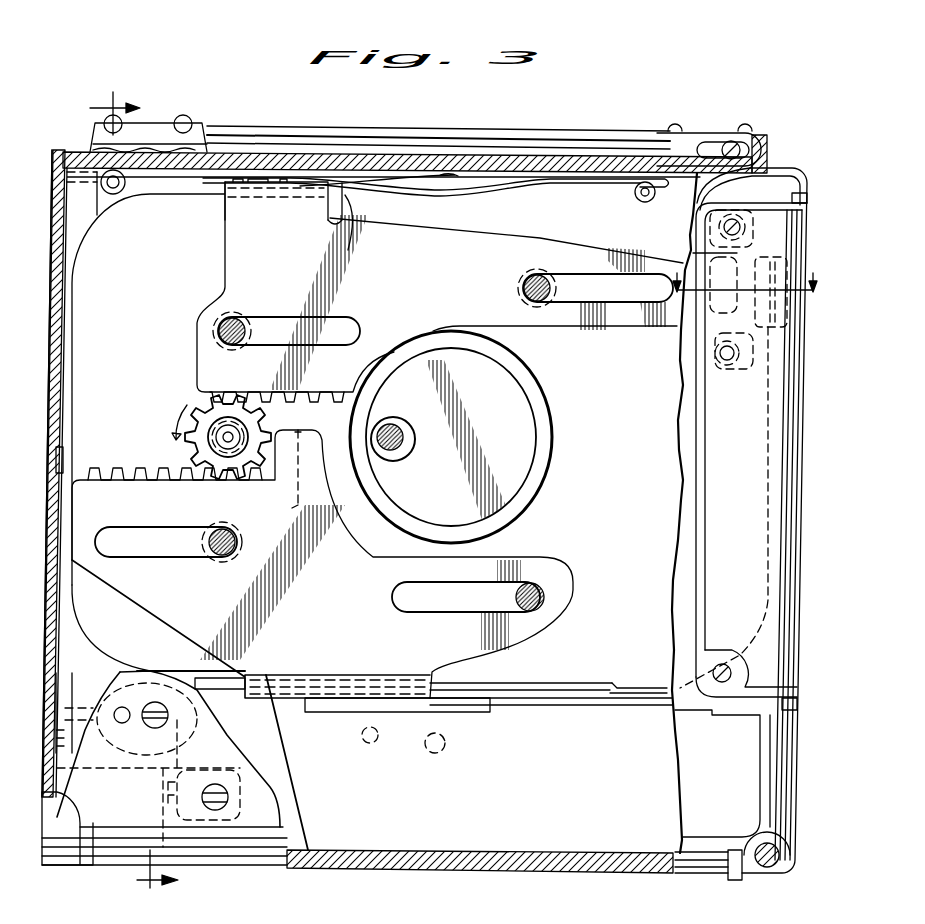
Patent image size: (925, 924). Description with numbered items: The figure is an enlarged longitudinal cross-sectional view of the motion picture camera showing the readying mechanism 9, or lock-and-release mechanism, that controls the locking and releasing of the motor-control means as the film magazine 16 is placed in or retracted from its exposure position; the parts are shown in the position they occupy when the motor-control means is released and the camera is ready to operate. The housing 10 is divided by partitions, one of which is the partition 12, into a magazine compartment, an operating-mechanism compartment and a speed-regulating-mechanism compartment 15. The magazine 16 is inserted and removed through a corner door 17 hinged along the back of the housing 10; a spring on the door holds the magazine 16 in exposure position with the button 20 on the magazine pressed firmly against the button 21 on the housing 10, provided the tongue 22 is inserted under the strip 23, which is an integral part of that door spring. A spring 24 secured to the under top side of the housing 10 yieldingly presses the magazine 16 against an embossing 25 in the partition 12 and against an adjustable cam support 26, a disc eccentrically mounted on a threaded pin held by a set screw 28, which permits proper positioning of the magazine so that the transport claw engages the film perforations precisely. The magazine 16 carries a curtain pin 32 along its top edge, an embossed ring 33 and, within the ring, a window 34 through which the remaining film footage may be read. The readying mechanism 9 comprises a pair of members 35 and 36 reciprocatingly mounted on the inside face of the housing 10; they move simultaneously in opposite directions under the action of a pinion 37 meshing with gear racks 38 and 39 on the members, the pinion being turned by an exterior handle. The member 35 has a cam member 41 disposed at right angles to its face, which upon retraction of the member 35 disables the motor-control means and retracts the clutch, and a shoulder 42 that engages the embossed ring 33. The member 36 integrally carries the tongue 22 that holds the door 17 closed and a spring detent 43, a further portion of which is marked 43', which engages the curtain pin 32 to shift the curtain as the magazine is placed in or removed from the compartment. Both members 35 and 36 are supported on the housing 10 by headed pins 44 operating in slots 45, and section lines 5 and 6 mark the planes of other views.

The section line 5- 5 is at (148, 495).
The section line 6- 6 is at (745, 273).
The readying mechanism 9 is at (168, 383).
The housing 10 is at (50, 631).
The partition 12 is at (558, 693).
The speed-regulating-mechanism compartment 15 is at (703, 773).
The magazine 16 is at (627, 488).
The corner door 17 is at (732, 515).
The button 20 is at (63, 460).
The button 21 is at (63, 437).
The tongue 22 is at (680, 313).
The strip 23 is at (697, 241).
The spring 24 is at (518, 192).
The embossing 25 is at (637, 690).
The adjustable cam support 26 is at (190, 705).
The set screw 28 is at (120, 712).
The pin 32 is at (333, 202).
The ring 33 is at (538, 415).
The window 34 is at (403, 447).
The member 35 is at (323, 625).
The member 36 is at (255, 252).
The pinion 37 is at (263, 463).
The gear rack 38 is at (158, 470).
The gear rack 39 is at (277, 400).
The cam member 41 is at (397, 700).
The shoulder 42 is at (284, 511).
The spring detent 43 is at (379, 200).
The spring arm 43' is at (362, 218).
The headed pins 44 is at (235, 325).
The slots 45 is at (303, 327).